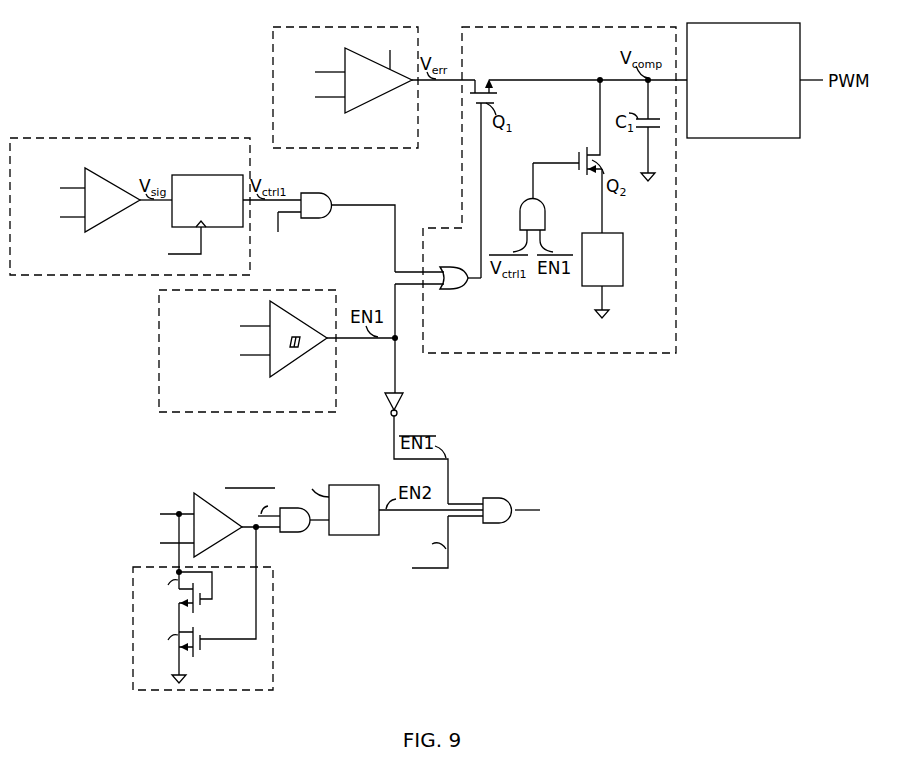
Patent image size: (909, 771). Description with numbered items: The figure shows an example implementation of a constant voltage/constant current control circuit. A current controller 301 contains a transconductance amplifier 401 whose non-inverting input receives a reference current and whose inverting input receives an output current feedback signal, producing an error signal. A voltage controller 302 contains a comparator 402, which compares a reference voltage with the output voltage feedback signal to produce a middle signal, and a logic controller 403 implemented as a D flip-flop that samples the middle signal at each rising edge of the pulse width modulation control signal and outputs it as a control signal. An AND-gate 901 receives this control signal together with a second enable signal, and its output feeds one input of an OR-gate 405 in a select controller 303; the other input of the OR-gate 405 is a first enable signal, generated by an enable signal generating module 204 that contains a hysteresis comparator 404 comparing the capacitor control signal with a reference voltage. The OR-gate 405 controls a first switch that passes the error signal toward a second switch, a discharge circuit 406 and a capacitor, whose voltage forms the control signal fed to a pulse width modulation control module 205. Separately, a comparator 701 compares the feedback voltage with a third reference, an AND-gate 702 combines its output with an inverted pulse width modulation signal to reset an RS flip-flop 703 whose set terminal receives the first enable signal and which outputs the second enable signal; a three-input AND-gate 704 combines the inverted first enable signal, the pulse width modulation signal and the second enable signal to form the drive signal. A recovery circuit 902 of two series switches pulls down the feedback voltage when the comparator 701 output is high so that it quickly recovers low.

The current controller 301 is at (345, 87).
The transconductance amplifier 401 is at (388, 92).
The voltage controller 302 is at (130, 206).
The comparator 402 is at (110, 178).
The logic controller 403 is at (210, 175).
The AND-gate 901 is at (330, 215).
The enable signal generating module 204 is at (247, 351).
The hysteresis comparator 404 is at (300, 357).
The OR-gate 405 is at (458, 289).
The select controller 303 is at (549, 190).
The discharge circuit 406 is at (602, 259).
The PWM control module 205 is at (743, 80).
The comparator 701 is at (228, 536).
The AND-gate 702 is at (292, 532).
The RS flip-flop 703 is at (352, 535).
The three-input AND-gate 704 is at (500, 523).
The recovery circuit 902 is at (203, 628).